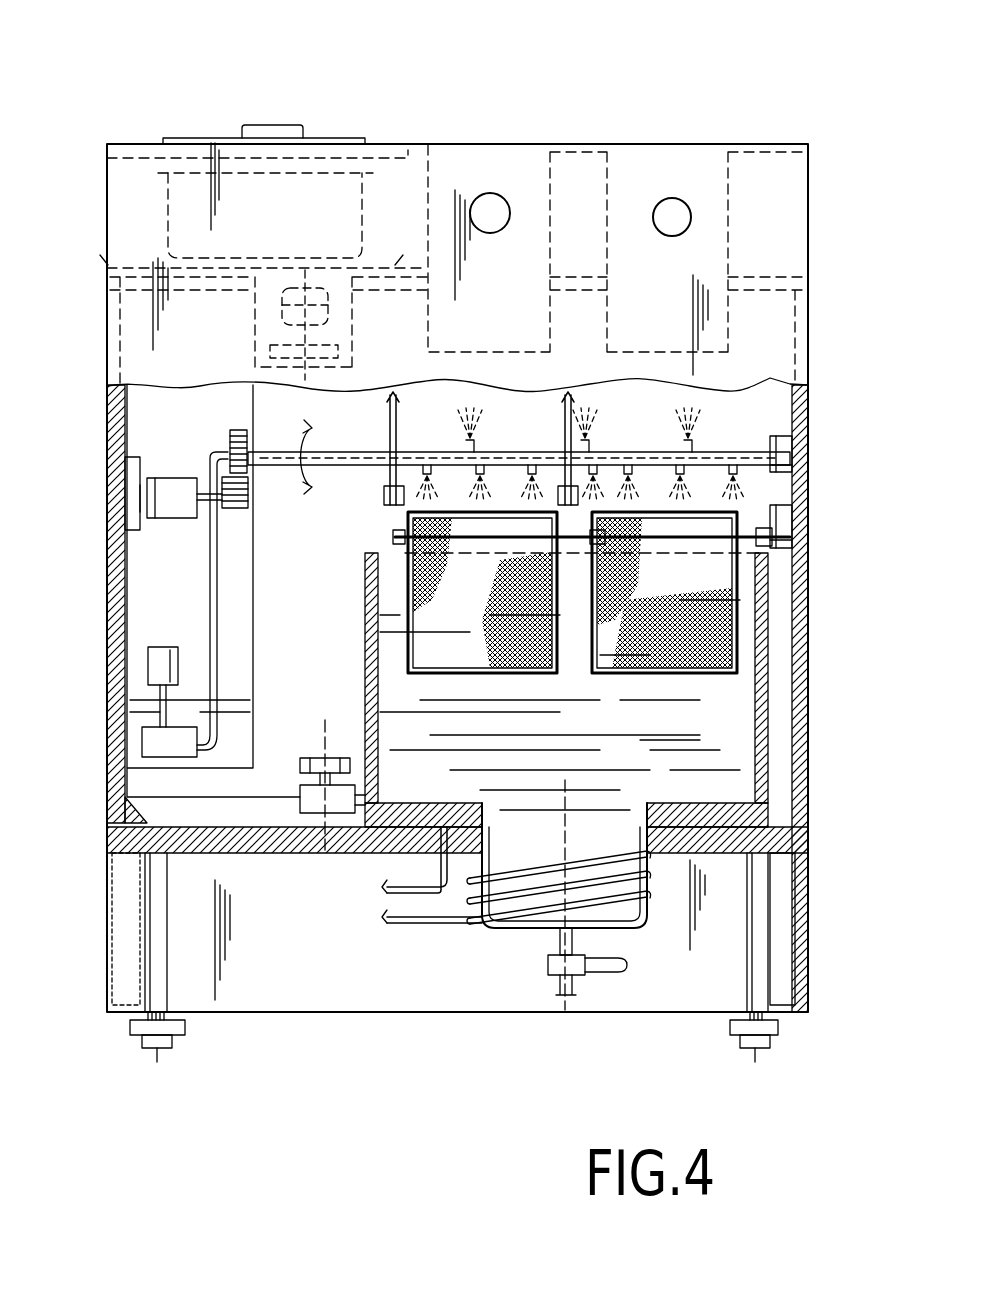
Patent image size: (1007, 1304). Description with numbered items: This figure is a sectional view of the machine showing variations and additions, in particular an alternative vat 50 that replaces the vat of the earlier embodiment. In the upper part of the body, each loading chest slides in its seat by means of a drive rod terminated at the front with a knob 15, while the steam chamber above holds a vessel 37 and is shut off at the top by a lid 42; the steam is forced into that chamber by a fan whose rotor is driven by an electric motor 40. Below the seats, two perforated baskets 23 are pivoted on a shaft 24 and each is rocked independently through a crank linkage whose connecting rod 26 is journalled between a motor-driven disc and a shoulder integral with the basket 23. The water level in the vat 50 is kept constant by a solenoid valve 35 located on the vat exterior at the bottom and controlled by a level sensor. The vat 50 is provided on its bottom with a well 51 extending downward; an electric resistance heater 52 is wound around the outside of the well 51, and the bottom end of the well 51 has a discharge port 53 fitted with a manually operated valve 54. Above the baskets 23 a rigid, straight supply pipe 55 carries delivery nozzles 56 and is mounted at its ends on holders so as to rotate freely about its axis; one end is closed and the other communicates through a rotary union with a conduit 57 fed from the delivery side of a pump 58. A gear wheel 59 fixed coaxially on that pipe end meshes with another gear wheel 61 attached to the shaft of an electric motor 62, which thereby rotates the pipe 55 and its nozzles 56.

The knob 15 is at (672, 210).
The perforated basket 23 is at (410, 653).
The shaft 24 is at (790, 515).
The connecting rod 26 is at (578, 392).
The solenoid valve 35 is at (318, 806).
The vessel 37 is at (318, 200).
The electric motor 40 is at (330, 305).
The lid 42 is at (215, 142).
The vat 50 is at (770, 663).
The well 51 is at (625, 928).
The electric resistance heater 52 is at (650, 882).
The discharge port 53 is at (550, 930).
The valve 54 is at (550, 965).
The supply pipe 55 is at (790, 447).
The delivery nozzle 56 is at (697, 445).
The conduit 57 is at (217, 565).
The pump 58 is at (142, 737).
The gear wheel 59 is at (235, 440).
The gear wheel 61 is at (243, 500).
The electric motor 62 is at (178, 500).